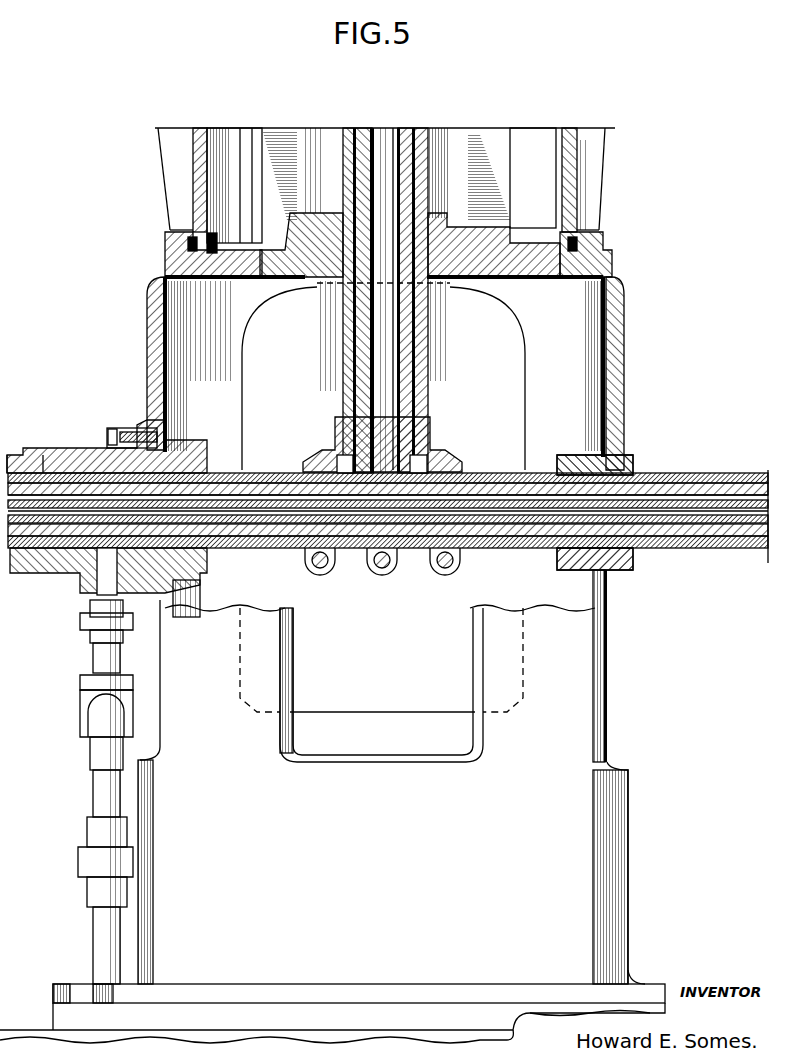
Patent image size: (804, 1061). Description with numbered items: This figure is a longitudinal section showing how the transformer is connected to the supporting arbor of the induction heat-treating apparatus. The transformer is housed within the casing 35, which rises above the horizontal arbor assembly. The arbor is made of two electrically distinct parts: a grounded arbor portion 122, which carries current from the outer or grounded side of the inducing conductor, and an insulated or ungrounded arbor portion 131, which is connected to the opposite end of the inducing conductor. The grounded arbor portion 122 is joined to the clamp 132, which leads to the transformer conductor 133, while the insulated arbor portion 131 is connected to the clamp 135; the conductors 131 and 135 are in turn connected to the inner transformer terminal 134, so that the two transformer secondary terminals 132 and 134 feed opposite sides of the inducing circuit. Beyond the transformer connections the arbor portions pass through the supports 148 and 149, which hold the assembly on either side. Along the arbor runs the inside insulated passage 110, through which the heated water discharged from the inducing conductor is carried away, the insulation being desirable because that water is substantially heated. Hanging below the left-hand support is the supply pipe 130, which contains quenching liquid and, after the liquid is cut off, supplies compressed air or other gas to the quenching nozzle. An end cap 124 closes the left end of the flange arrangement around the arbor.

The transformer casing 35 is at (162, 176).
The insulated passage 110 is at (769, 512).
The grounded arbor portion 122 is at (46, 456).
The end cap 124 is at (10, 458).
The supply pipe 130 is at (108, 588).
The insulated arbor portion 131 is at (8, 545).
The clamp 132 is at (310, 458).
The transformer conductor 133 is at (352, 130).
The inner transformer terminal 134 is at (402, 130).
The clamp 135 is at (360, 560).
The support 148 is at (638, 470).
The support 149 is at (106, 436).